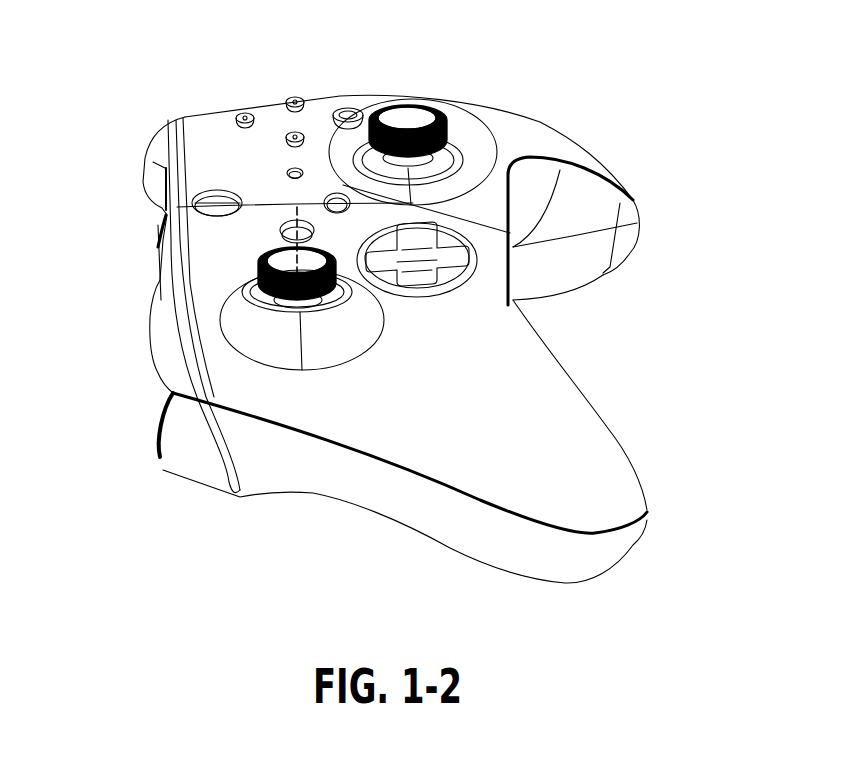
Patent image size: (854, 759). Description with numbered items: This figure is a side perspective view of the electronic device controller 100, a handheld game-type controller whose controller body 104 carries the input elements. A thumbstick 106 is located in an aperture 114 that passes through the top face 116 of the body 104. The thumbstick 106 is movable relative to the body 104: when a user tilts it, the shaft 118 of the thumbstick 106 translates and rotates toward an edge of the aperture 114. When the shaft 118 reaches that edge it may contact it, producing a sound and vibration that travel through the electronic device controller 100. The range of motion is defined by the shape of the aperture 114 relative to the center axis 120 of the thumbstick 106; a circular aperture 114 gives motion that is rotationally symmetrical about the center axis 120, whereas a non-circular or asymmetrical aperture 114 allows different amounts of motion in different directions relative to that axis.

The electronic device controller 100 is at (445, 326).
The controller body 104 is at (585, 433).
The thumbstick 106 is at (265, 248).
The aperture 114 is at (256, 310).
The top face 116 is at (203, 233).
The shaft 118 is at (315, 303).
The center axis 120 is at (297, 230).